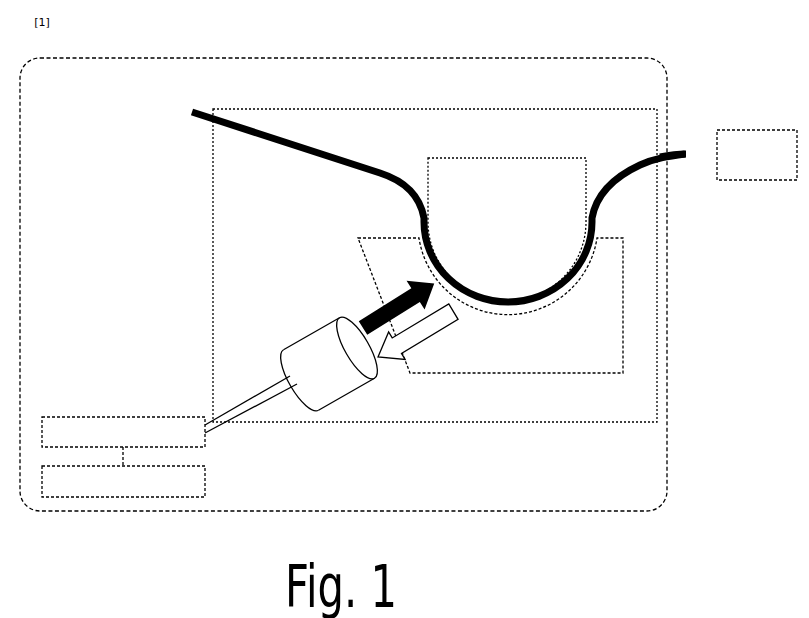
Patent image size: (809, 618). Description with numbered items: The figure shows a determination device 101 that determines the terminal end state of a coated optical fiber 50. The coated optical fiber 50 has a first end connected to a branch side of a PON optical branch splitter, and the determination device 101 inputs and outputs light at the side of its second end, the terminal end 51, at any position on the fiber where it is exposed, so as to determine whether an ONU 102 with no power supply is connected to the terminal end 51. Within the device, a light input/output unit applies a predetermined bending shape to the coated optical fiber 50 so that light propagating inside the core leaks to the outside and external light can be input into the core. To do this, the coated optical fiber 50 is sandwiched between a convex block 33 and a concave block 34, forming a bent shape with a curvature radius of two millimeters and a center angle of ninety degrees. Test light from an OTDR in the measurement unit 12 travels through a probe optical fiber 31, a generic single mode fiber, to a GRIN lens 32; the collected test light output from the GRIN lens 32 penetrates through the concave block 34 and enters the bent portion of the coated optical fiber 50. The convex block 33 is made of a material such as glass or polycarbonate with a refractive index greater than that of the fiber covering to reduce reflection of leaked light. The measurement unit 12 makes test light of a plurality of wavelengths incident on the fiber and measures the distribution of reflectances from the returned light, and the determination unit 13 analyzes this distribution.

The determination device 101 is at (310, 58).
The ONU 102 is at (766, 130).
The coated optical fiber 50 is at (203, 125).
The terminal end 51 is at (684, 148).
The convex block 33 is at (514, 158).
The concave block 34 is at (469, 374).
The GRIN lens 32 is at (306, 337).
The probe optical fiber 31 is at (250, 406).
The measurement unit 12 is at (205, 440).
The determination unit 13 is at (205, 482).